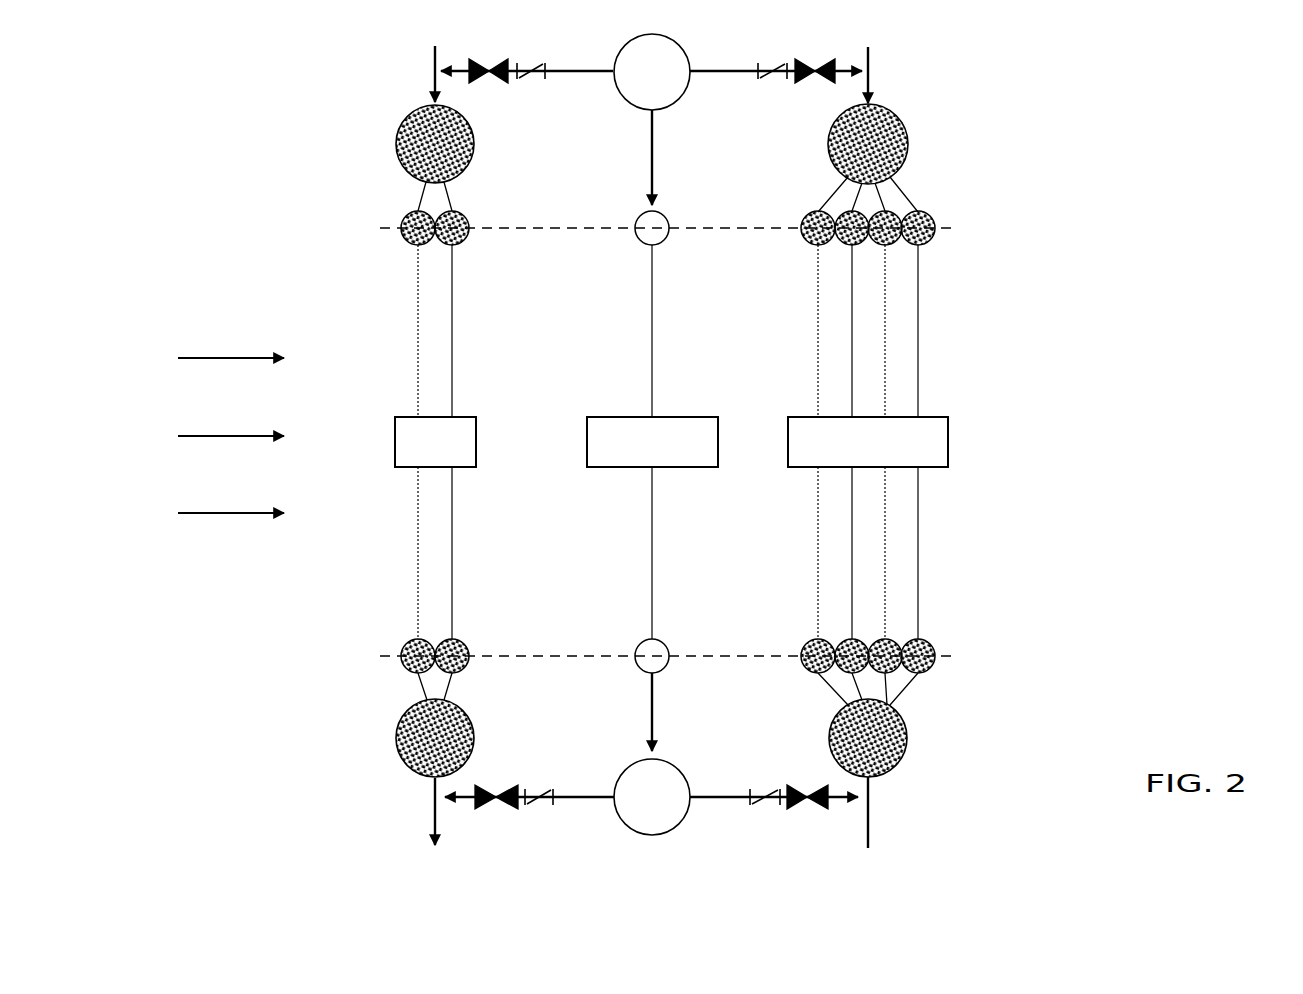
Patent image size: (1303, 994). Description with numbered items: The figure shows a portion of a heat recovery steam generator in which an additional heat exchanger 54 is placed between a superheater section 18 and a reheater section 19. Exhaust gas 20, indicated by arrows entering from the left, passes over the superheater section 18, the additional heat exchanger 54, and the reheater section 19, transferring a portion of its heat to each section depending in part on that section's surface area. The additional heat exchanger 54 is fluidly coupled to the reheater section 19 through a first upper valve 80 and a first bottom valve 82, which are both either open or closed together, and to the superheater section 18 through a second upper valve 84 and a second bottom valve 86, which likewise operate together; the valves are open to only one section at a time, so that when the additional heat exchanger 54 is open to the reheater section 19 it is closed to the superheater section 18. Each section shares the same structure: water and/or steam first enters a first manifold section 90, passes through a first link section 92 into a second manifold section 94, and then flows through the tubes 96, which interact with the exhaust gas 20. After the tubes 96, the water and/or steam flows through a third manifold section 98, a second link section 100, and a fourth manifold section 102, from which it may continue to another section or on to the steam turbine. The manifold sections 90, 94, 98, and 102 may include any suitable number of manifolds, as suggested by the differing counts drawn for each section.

The superheater section 18 is at (476, 440).
The reheater section 19 is at (948, 440).
The exhaust gas 20 is at (228, 436).
The additional heat exchanger 54 is at (718, 440).
The first upper valve 80 is at (805, 82).
The first bottom valve 82 is at (813, 787).
The second upper valve 84 is at (498, 82).
The second bottom valve 86 is at (492, 787).
The first manifold section 90 is at (618, 45).
The first link section 92 is at (420, 195).
The second manifold section 94 is at (463, 242).
The tubes 96 is at (452, 548).
The third manifold section 98 is at (463, 643).
The second link section 100 is at (422, 688).
The fourth manifold section 102 is at (408, 767).